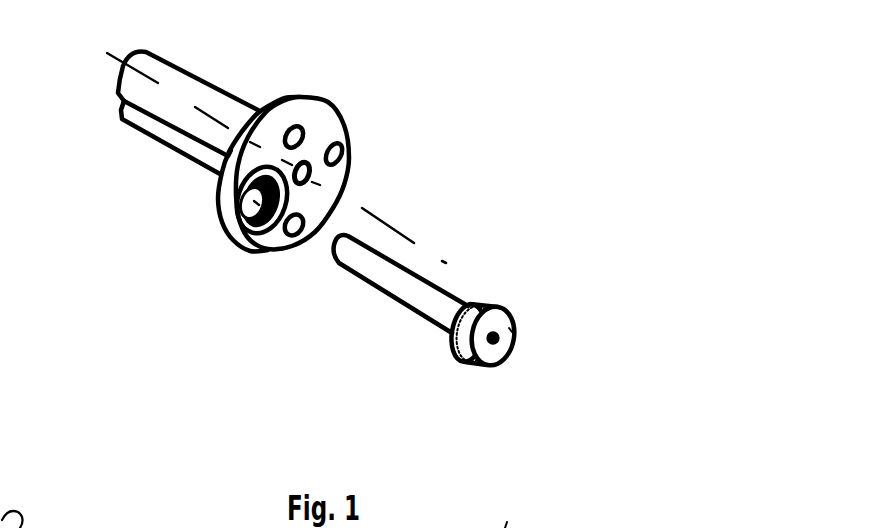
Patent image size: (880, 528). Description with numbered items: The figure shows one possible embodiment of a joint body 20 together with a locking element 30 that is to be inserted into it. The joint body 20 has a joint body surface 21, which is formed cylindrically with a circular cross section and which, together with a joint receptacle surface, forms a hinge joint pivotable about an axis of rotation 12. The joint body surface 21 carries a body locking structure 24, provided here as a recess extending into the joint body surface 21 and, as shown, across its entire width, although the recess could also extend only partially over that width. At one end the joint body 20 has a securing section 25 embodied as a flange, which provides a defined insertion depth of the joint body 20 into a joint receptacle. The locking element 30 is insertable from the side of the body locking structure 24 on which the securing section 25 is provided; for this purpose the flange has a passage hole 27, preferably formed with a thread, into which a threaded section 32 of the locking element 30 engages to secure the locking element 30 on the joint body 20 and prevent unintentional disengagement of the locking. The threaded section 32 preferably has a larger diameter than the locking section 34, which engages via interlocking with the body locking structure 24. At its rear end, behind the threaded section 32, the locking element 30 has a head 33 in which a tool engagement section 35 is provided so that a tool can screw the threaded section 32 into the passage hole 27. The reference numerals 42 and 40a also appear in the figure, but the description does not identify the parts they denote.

The axis of rotation 12 is at (395, 221).
The joint body 20 is at (252, 162).
The joint body surface 21 is at (176, 76).
The body locking structure 24 is at (153, 124).
The securing section 25 is at (323, 127).
The passage hole 27 is at (232, 230).
The locking element 30 is at (459, 314).
The threaded section 32 is at (453, 347).
The head 33 is at (515, 323).
The locking section 34 is at (368, 268).
The tool engagement section 35 is at (493, 371).
The connecting element 42 is at (53, 527).
The bracket arm 40a is at (77, 527).